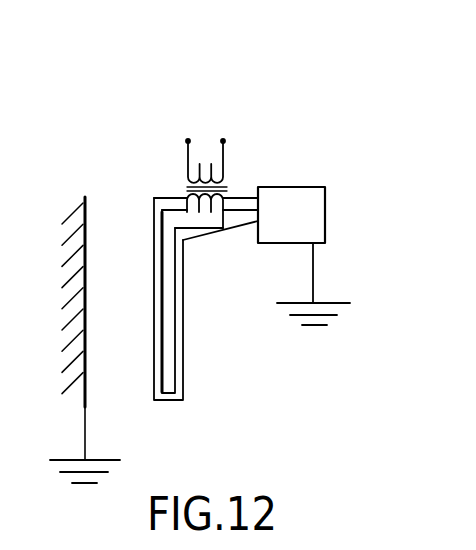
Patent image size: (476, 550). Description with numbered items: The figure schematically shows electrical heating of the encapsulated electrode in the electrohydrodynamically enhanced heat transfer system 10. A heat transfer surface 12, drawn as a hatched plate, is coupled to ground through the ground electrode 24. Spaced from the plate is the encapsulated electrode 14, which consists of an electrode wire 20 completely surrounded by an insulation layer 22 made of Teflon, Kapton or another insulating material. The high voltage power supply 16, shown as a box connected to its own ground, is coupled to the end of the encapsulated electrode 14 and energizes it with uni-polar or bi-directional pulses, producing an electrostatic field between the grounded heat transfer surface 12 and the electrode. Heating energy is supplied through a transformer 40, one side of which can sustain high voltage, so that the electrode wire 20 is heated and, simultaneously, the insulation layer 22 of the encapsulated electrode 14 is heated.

The heat transfer system 10 is at (250, 133).
The heat transfer surface 12 is at (83, 229).
The encapsulated electrode 14 is at (215, 330).
The high voltage power supply 16 is at (316, 216).
The electrode wire 20 is at (182, 368).
The insulation layer 22 is at (173, 400).
The ground electrode 24 is at (85, 438).
The transformer 40 is at (188, 170).